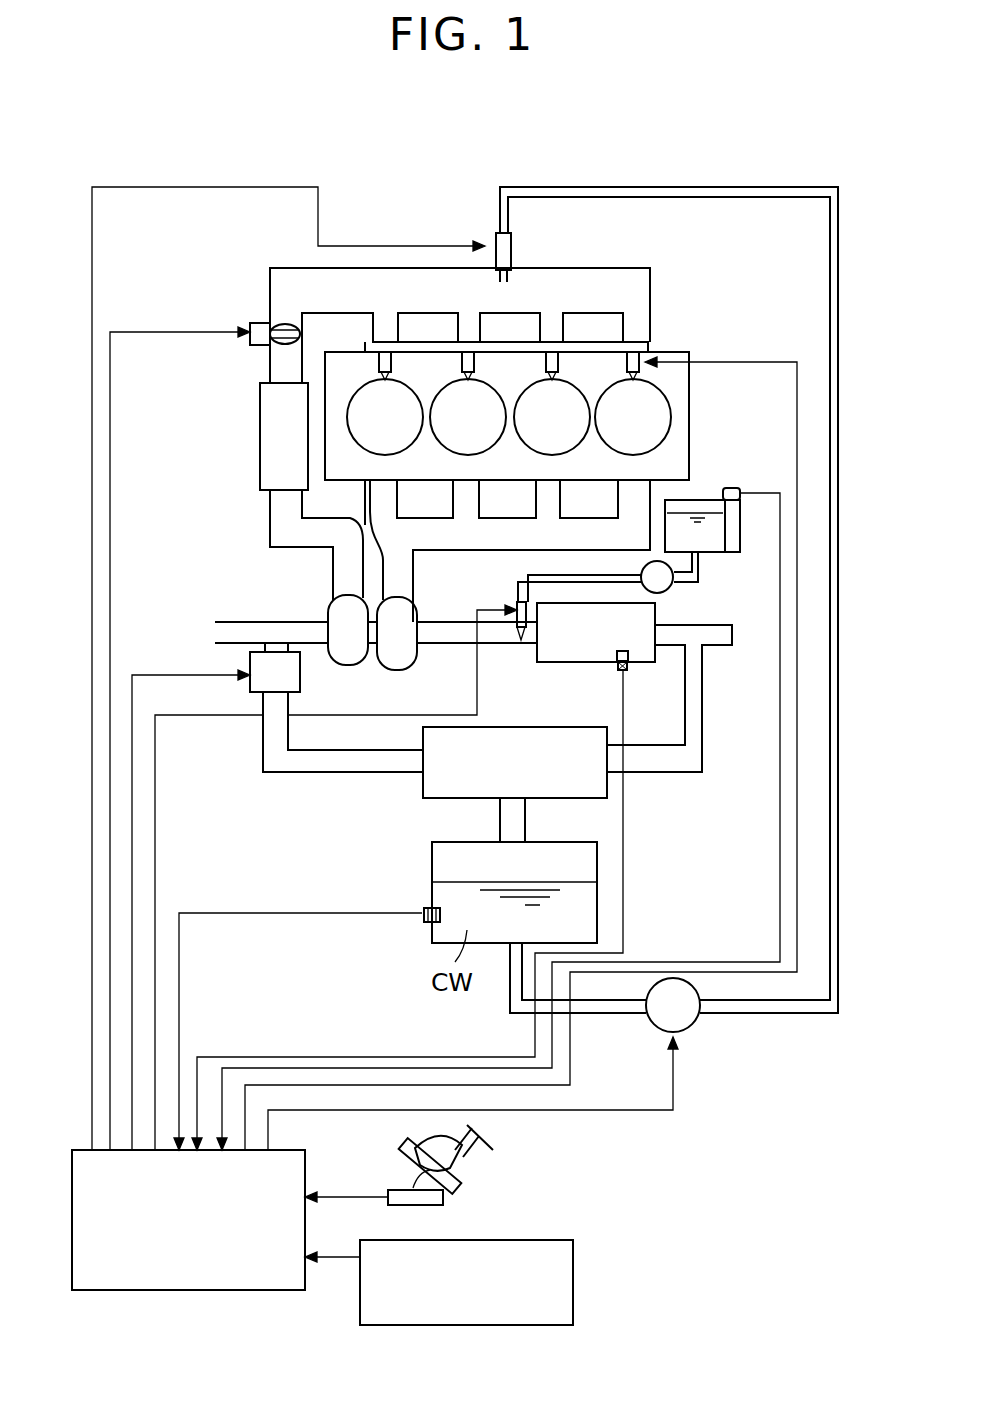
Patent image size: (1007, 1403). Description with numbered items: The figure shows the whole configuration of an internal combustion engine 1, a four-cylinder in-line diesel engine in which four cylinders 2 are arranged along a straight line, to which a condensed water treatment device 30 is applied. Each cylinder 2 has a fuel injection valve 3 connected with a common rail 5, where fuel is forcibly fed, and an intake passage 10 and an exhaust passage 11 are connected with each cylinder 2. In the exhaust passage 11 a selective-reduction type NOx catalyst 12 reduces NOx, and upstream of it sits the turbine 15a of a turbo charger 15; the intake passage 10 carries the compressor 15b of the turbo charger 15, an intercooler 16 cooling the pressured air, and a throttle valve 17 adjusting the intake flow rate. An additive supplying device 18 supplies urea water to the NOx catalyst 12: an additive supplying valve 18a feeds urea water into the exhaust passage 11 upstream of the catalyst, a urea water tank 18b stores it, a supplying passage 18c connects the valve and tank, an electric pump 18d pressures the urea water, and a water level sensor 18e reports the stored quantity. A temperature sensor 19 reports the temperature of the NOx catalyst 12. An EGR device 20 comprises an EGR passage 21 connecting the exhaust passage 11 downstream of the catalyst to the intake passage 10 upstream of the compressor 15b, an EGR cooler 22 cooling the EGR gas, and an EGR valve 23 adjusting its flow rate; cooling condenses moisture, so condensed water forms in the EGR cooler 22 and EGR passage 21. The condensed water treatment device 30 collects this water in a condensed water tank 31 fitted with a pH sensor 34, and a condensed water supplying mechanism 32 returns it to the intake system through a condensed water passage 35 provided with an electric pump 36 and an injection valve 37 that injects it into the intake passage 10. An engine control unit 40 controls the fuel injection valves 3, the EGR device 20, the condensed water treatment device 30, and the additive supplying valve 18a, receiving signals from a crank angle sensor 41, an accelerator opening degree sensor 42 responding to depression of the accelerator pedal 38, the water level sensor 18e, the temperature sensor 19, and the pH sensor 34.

The internal combustion engine 1 is at (377, 178).
The cylinder 2 is at (593, 490).
The fuel injection valve 3 is at (624, 365).
The common rail 5 is at (634, 342).
The intake passage 10 is at (270, 283).
The exhaust passage 11 is at (416, 551).
The NOx catalyst 12 is at (553, 662).
The turbo charger 15 is at (318, 597).
The turbine 15a is at (400, 668).
The compressor 15b is at (352, 665).
The intercooler 16 is at (261, 435).
The throttle valve 17 is at (257, 323).
The additive supplying device 18 is at (705, 585).
The additive supplying valve 18a is at (515, 608).
The urea water tank 18b is at (700, 499).
The supplying passage 18c is at (700, 575).
The electric pump 18d is at (648, 591).
The water level sensor 18e is at (736, 488).
The temperature sensor 19 is at (632, 668).
The EGR device 20 is at (267, 780).
The EGR passage 21 is at (265, 745).
The EGR cooler 22 is at (437, 782).
The EGR valve 23 is at (250, 665).
The condensed water treatment device 30 is at (407, 935).
The condensed water tank 31 is at (432, 865).
The condensed water supplying mechanism 32 is at (782, 1038).
The pH sensor 34 is at (422, 908).
The condensed water passage 35 is at (840, 672).
The electric pump 36 is at (650, 1018).
The injection valve 37 is at (508, 252).
The accelerator pedal 38 is at (400, 1143).
The engine control unit 40 is at (75, 1150).
The crank angle sensor 41 is at (573, 1255).
The accelerator opening degree sensor 42 is at (443, 1198).